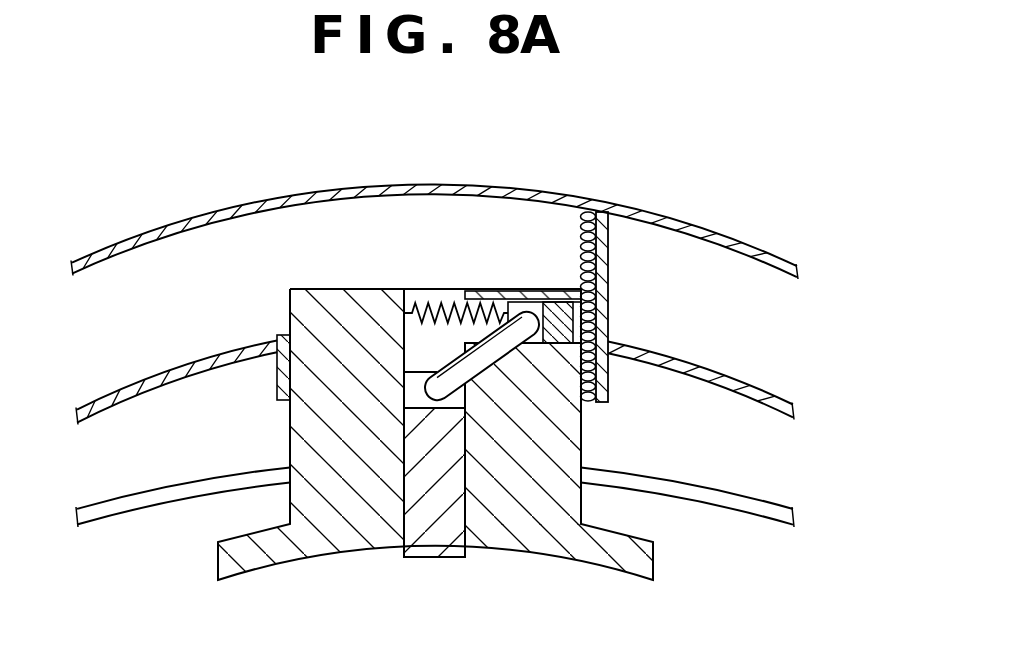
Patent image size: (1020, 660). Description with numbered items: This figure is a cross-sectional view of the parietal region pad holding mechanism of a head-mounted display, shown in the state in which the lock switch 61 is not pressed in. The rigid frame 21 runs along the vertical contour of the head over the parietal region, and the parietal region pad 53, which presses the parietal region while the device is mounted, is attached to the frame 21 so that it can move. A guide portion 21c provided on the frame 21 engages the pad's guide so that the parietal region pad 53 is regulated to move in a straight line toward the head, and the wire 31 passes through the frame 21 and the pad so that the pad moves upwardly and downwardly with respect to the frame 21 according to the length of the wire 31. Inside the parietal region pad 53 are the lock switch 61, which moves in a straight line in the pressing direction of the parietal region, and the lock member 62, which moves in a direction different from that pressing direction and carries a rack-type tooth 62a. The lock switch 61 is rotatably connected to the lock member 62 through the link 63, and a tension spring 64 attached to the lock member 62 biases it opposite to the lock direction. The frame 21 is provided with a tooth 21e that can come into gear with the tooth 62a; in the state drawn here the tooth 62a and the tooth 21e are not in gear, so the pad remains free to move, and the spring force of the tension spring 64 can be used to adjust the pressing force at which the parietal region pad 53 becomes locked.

The frame 21 is at (203, 213).
The guide portion 21c is at (283, 333).
The tooth 21e is at (595, 213).
The wire 31 is at (163, 495).
The parietal region pad 53 is at (298, 548).
The lock switch 61 is at (437, 537).
The lock member 62 is at (555, 292).
The rack-type tooth 62a is at (575, 302).
The link 63 is at (478, 358).
The tension spring 64 is at (448, 302).